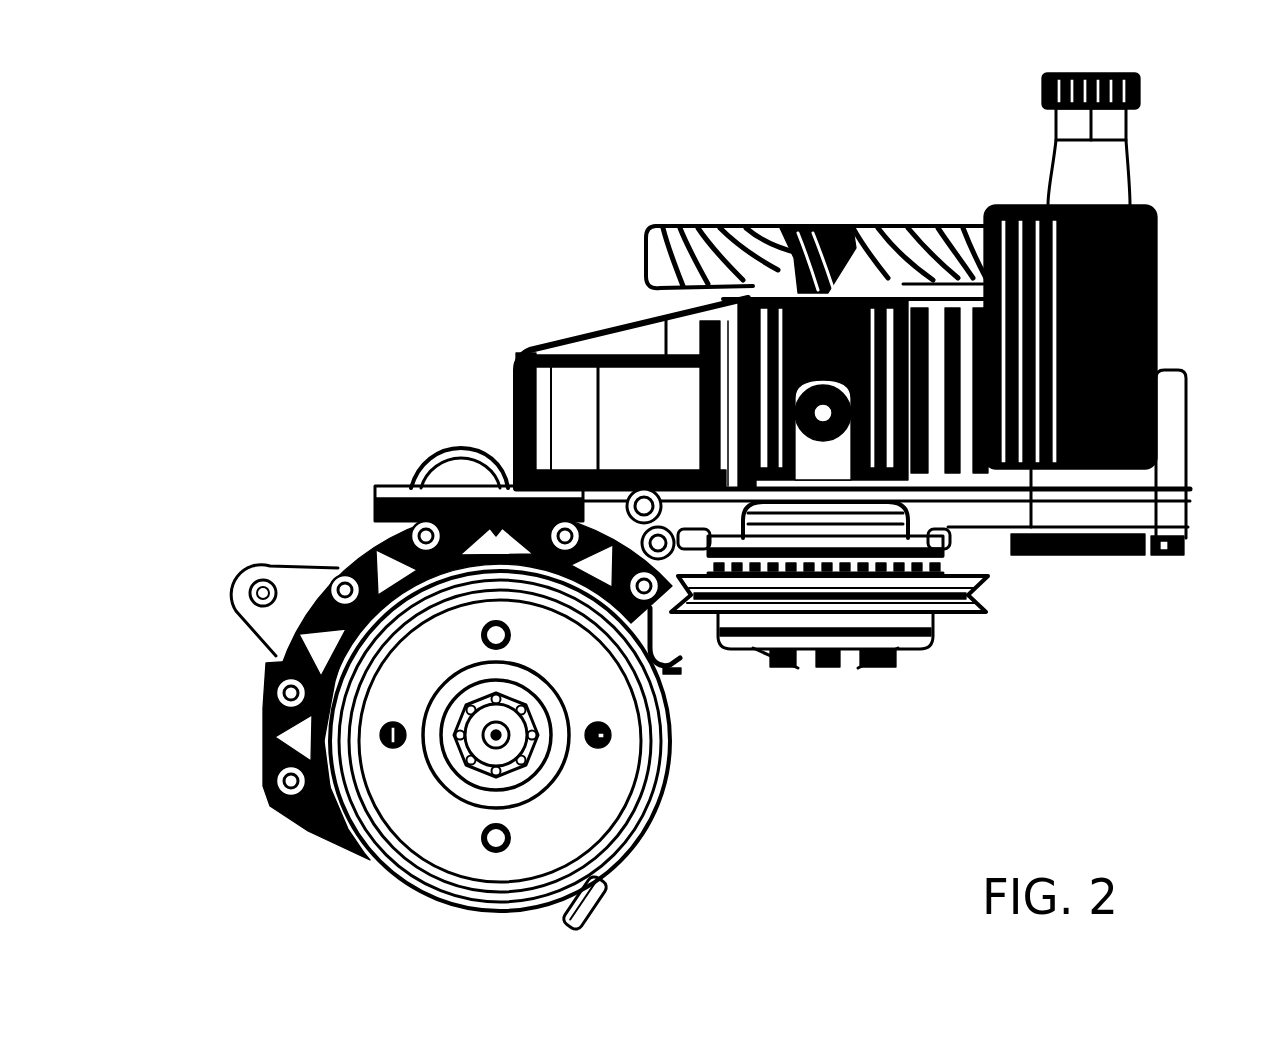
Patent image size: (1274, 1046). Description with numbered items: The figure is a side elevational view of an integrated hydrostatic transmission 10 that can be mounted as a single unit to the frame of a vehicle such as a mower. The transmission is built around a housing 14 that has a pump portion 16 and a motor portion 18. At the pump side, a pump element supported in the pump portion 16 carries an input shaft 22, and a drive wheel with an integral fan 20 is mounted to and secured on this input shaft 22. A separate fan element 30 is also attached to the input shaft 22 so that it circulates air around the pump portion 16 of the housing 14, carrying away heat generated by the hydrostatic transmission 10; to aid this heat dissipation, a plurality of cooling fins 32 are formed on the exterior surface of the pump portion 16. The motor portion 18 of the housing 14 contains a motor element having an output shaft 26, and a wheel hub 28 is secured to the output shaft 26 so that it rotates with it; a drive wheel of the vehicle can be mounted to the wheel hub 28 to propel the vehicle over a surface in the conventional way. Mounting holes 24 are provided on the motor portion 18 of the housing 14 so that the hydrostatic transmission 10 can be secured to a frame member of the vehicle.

The integrated hydrostatic transmission 10 is at (413, 186).
The housing 14 is at (528, 332).
The pump portion 16 is at (1165, 303).
The motor portion 18 is at (250, 769).
The drive wheel with integral fan 20 is at (975, 598).
The input shaft 22 is at (930, 558).
The mounting holes 24 is at (650, 535).
The output shaft 26 is at (478, 742).
The wheel hub 28 is at (593, 782).
The fan element 30 is at (826, 215).
The cooling fins 32 is at (720, 328).